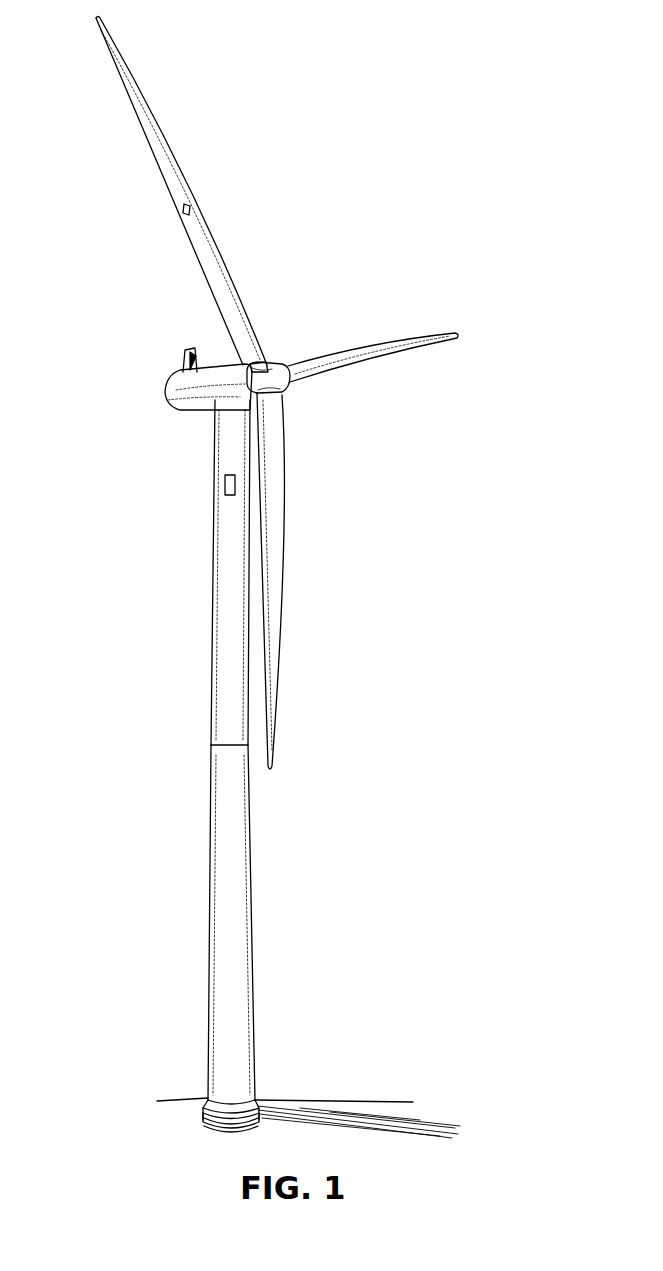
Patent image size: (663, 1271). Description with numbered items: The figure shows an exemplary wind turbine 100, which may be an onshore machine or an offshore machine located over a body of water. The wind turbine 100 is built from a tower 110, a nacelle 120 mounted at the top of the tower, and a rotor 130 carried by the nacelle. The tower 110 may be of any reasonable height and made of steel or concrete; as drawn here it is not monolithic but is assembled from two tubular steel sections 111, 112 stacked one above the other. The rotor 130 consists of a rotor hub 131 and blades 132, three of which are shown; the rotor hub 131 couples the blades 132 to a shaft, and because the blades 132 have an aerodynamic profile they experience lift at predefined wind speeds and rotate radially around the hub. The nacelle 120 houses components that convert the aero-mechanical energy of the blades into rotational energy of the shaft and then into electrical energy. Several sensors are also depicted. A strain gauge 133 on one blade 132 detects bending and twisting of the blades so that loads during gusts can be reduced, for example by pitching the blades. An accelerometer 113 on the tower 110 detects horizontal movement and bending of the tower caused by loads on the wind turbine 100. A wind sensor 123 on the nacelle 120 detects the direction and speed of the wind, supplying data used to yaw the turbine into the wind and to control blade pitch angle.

The wind turbine 100 is at (275, 578).
The tower 110 is at (208, 766).
The tubular steel section 111 is at (212, 921).
The tubular steel section 112 is at (213, 556).
The accelerometer 113 is at (222, 484).
The nacelle 120 is at (179, 368).
The wind sensor 123 is at (160, 386).
The rotor 130 is at (288, 368).
The rotor hub 131 is at (270, 362).
The blade 132 is at (274, 393).
The strain gauge 133 is at (183, 208).